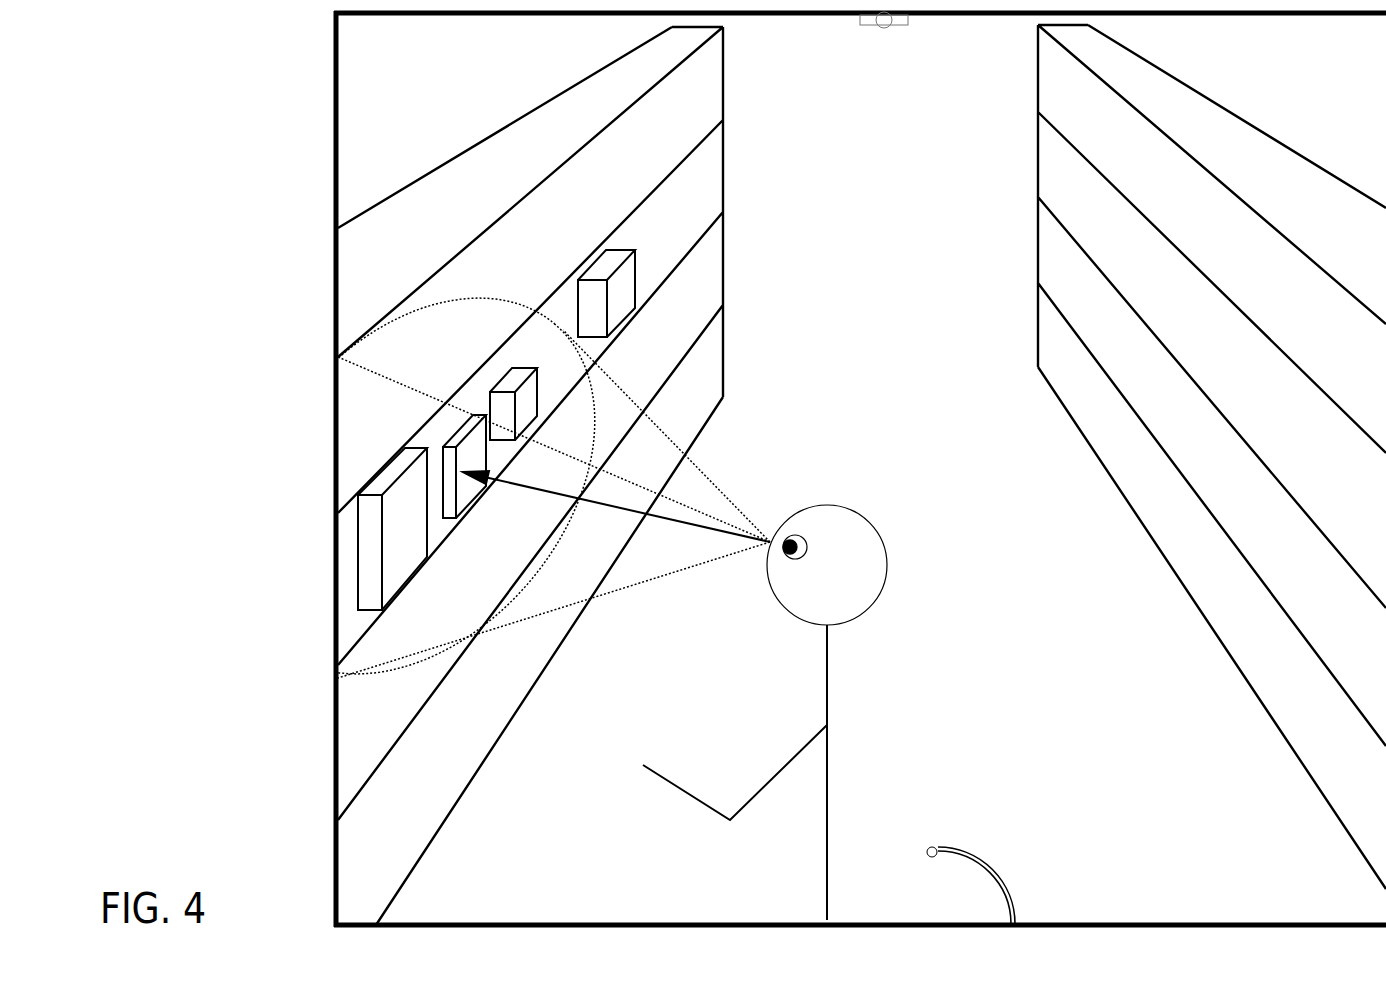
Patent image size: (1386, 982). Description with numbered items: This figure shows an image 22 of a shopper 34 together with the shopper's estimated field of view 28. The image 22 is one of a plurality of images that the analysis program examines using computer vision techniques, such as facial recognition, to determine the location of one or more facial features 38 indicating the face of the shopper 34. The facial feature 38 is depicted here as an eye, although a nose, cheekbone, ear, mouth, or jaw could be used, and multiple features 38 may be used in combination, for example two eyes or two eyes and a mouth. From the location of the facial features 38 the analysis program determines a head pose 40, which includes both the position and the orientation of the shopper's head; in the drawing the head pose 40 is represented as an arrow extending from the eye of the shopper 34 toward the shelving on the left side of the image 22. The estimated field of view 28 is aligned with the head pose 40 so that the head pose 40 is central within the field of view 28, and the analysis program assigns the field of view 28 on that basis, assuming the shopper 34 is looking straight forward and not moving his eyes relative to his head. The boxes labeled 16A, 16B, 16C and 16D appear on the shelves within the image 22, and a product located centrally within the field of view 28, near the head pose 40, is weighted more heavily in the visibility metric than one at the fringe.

The image 22 is at (335, 105).
The object (box) 16A is at (471, 413).
The object (box with logo) 16B is at (404, 447).
The object (box) 16C is at (503, 366).
The object (box) 16D is at (588, 258).
The estimated field of view 28 is at (723, 490).
The shopper 34 is at (829, 680).
The facial feature 38 is at (795, 536).
The head pose 40 is at (692, 523).